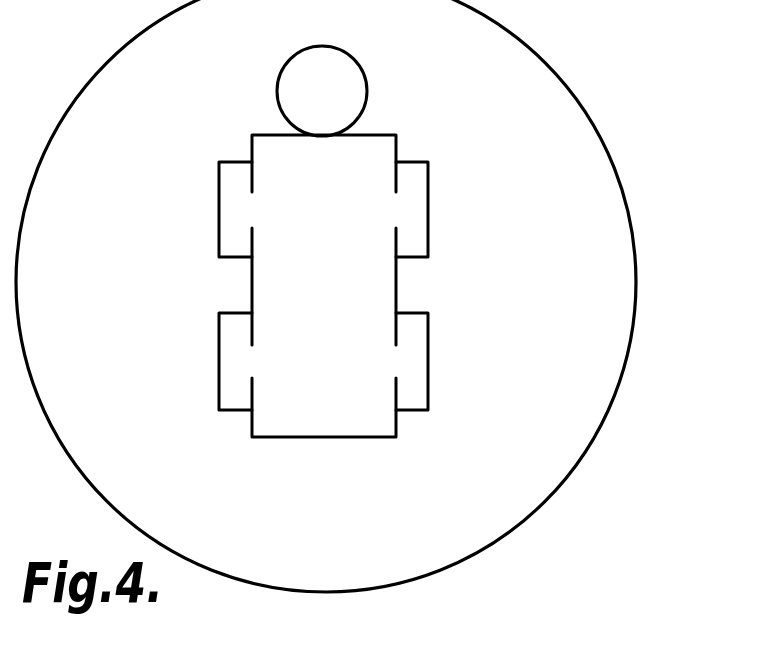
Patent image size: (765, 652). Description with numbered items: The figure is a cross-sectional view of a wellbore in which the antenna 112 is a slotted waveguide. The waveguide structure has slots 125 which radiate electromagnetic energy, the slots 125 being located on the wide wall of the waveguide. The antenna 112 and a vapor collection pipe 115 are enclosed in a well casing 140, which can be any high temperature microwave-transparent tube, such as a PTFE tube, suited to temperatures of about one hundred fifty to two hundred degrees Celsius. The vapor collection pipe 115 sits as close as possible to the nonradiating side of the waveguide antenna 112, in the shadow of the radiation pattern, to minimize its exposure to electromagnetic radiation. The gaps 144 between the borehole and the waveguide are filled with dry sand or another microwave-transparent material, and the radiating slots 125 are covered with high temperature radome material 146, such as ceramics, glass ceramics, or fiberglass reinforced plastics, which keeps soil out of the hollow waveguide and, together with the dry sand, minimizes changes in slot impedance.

The well casing 140 is at (590, 447).
The gaps 144 is at (152, 336).
The vapor collection pipe 115 is at (283, 70).
The antenna 112 is at (382, 134).
The radome material 146 is at (218, 203).
The slots 125 is at (397, 210).